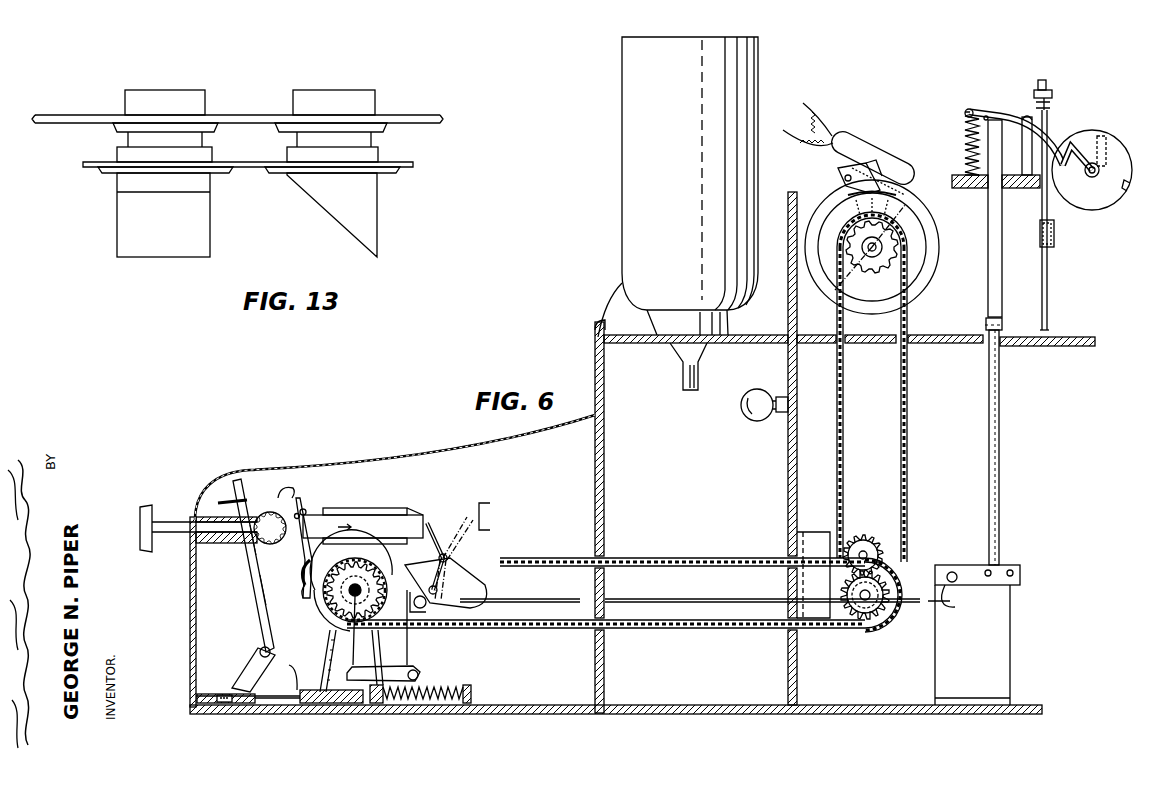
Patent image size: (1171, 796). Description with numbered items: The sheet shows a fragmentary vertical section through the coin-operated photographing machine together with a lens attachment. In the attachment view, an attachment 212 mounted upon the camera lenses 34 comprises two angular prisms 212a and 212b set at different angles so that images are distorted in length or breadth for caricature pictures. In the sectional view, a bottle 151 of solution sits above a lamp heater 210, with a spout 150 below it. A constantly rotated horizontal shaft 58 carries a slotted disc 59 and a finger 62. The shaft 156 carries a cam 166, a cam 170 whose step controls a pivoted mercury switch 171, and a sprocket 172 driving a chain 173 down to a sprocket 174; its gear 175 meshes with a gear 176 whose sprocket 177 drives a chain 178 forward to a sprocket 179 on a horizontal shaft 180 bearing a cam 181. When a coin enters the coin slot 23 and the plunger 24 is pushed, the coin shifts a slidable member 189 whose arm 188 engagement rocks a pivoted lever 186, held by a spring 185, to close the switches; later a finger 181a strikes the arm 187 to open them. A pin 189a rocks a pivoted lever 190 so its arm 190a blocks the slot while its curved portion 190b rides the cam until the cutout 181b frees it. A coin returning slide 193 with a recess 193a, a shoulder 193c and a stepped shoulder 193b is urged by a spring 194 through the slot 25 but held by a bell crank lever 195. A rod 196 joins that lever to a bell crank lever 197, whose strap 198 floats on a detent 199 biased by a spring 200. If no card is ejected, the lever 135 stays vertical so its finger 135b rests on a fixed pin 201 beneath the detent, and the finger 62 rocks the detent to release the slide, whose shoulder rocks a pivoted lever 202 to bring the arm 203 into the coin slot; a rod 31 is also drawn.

In FIG. 13, the camera lenses 34 is at (128, 96).
In FIG. 13, the attachment 212 is at (118, 152).
In FIG. 13, the angular prism 212a is at (118, 240).
In FIG. 13, the angular prism 212b is at (378, 241).
In FIG. 6, the bottle 151 is at (748, 62).
In FIG. 6, the discharge spout 150 is at (700, 378).
In FIG. 6, the lamp heater 210 is at (750, 420).
In FIG. 6, the cam 166 is at (836, 208).
In FIG. 6, the cam 170 is at (922, 222).
In FIG. 6, the sprocket 172 is at (912, 262).
In FIG. 6, the shaft 156 is at (884, 247).
In FIG. 6, the chain 173 is at (890, 392).
In FIG. 6, the mercury switch 171 is at (862, 148).
In FIG. 6, the spring 200 is at (970, 136).
In FIG. 6, the detent 199 is at (985, 114).
In FIG. 6, the strap 198 is at (995, 540).
In FIG. 6, the fixed pin 201 is at (1030, 125).
In FIG. 6, the rod 31 is at (1048, 260).
In FIG. 6, the finger 135b is at (1048, 82).
In FIG. 6, the lever 135 is at (1056, 224).
In FIG. 6, the disc 59 is at (1120, 156).
In FIG. 6, the finger 62 is at (1080, 142).
In FIG. 6, the horizontal shaft 58 is at (1100, 170).
In FIG. 6, the chain 178 is at (680, 550).
In FIG. 6, the rod 196 is at (680, 600).
In FIG. 6, the sprocket 174 is at (862, 532).
In FIG. 6, the gear 175 is at (880, 555).
In FIG. 6, the gear 176 is at (886, 626).
In FIG. 6, the sprocket 177 is at (852, 618).
In FIG. 6, the bell crank lever 197 is at (1012, 582).
In FIG. 6, the plunger 24 is at (170, 535).
In FIG. 6, the arm 203 is at (238, 498).
In FIG. 6, the coin slot 23 is at (268, 512).
In FIG. 6, the arm 190a is at (292, 486).
In FIG. 6, the pivoted lever 190 is at (305, 508).
In FIG. 6, the pin 189a is at (298, 522).
In FIG. 6, the curved portion 190b is at (306, 586).
In FIG. 6, the finger 181a is at (363, 526).
In FIG. 6, the slidable member 189 is at (416, 512).
In FIG. 6, the arm 188 is at (432, 522).
In FIG. 6, the pivoted lever 186 is at (447, 556).
In FIG. 6, the spring 185 is at (488, 548).
In FIG. 6, the arm 187 is at (426, 606).
In FIG. 6, the cam 181 is at (323, 606).
In FIG. 6, the curved cutout portion 181b is at (305, 586).
In FIG. 6, the horizontal shaft 180 is at (354, 605).
In FIG. 6, the sprocket 179 is at (325, 618).
In FIG. 6, the pivoted lever 202 is at (255, 596).
In FIG. 6, the bell crank lever 195 is at (412, 648).
In FIG. 6, the recess 193a is at (230, 704).
In FIG. 6, the coin returning slide 193 is at (315, 704).
In FIG. 6, the shoulder 193c is at (296, 670).
In FIG. 6, the stepped shoulder 193b is at (375, 704).
In FIG. 6, the spring 194 is at (447, 688).
In FIG. 6, the slot 25 is at (195, 698).